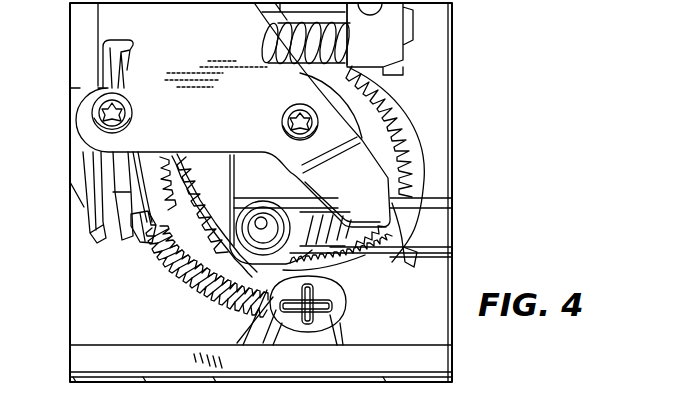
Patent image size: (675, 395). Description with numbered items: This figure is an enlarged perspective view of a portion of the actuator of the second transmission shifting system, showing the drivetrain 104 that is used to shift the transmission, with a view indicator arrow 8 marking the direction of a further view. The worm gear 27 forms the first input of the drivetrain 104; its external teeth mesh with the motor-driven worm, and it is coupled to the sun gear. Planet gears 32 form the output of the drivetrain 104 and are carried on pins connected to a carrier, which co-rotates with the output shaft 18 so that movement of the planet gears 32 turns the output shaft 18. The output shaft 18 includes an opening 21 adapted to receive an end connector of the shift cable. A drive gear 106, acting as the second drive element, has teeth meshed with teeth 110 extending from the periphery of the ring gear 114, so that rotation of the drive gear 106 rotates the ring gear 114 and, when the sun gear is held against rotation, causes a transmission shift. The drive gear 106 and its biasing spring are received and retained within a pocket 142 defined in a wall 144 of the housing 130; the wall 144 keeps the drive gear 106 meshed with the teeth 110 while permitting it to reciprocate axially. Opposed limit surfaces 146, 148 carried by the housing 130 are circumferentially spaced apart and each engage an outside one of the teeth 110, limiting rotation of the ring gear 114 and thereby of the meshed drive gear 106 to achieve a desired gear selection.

The view direction of FIG. 8 is at (204, 334).
The output shaft 18 is at (333, 100).
The opening 21 is at (433, 207).
The worm gear 27 is at (370, 107).
The planet gears 32 is at (169, 155).
The drivetrain 104 is at (426, 133).
The drive gear 106 is at (204, 247).
The teeth 110 is at (153, 252).
The ring gear 114 is at (165, 250).
The housing 130 is at (445, 106).
The pocket 142 is at (350, 284).
The wall 144 is at (320, 333).
The limit surface 146 is at (147, 229).
The limit surface 148 is at (402, 256).